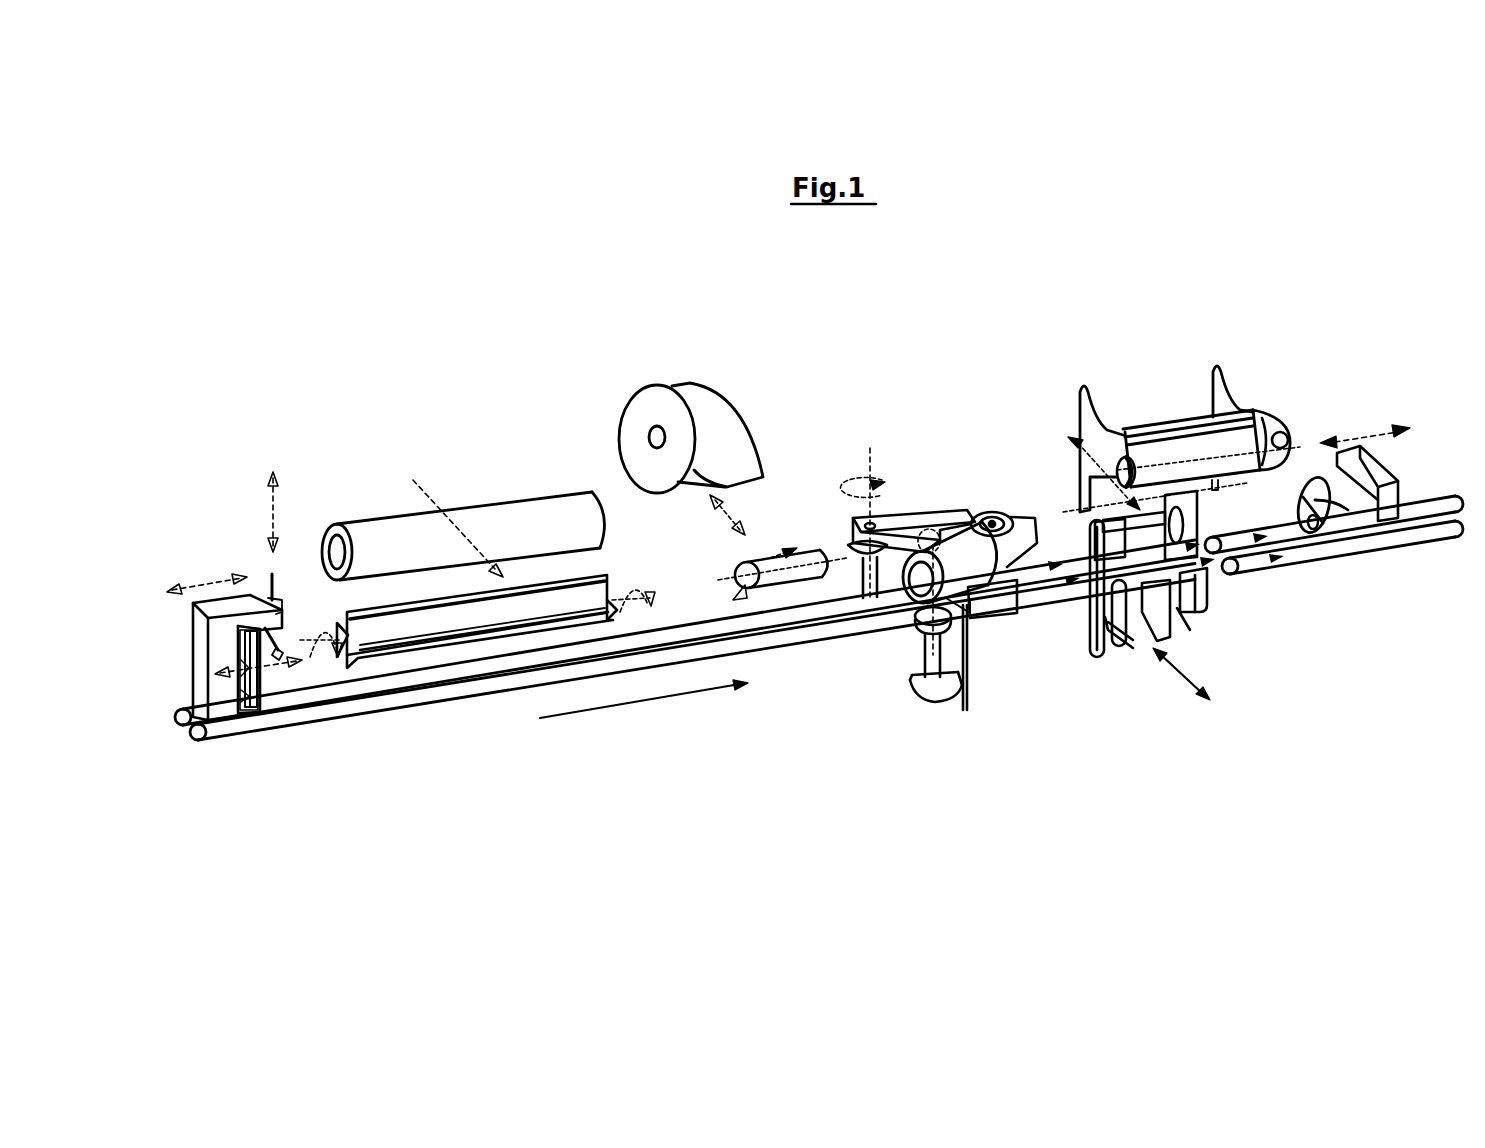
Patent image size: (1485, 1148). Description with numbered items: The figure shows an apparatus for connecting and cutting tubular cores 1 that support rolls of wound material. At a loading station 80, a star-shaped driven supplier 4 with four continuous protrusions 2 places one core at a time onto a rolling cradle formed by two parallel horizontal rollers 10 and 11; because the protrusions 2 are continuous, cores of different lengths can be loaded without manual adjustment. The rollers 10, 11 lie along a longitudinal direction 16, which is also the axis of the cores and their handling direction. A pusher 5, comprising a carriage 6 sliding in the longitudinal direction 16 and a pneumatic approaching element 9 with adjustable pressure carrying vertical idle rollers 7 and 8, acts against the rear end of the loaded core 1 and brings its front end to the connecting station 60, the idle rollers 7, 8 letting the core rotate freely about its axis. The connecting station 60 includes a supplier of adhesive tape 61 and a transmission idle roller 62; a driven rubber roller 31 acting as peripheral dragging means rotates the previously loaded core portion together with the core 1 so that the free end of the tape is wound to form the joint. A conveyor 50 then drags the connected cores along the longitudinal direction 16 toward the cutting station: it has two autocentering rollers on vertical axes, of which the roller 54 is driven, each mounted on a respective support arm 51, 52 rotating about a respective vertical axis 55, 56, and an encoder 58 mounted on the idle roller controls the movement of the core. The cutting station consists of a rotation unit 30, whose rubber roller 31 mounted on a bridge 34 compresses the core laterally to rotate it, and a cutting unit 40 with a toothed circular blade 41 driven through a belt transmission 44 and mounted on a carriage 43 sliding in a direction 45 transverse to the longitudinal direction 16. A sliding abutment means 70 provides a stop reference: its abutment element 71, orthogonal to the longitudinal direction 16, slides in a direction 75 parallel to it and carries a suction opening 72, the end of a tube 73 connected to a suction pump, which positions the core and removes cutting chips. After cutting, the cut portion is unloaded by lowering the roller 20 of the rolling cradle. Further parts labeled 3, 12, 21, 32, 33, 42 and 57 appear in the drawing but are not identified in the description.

The tubular core 1 is at (397, 537).
The continuous protrusion 2 is at (573, 590).
The pivot joint 3 is at (650, 597).
The star-shaped driven supplier 4 is at (522, 633).
The pusher 5 is at (213, 515).
The carriage 6 is at (193, 660).
The vertical idle roller 7 is at (262, 697).
The vertical idle roller 8 is at (263, 677).
The approaching element 9 is at (238, 714).
The roller 10 is at (383, 703).
The roller 11 is at (332, 693).
The pin 12 is at (320, 623).
The longitudinal direction 16 is at (640, 703).
The roller 20 is at (1428, 527).
The upper rail section 21 is at (1410, 510).
The rotation unit 30 is at (1147, 325).
The driven rubber roller 31 is at (1247, 468).
The hub 32 is at (1274, 430).
The flange 33 is at (1080, 508).
The bridge 34 is at (1235, 398).
The cutting unit 40 is at (1128, 745).
The toothed circular blade 41 is at (1197, 519).
The slide block 42 is at (1203, 590).
The carriage 43 is at (1124, 648).
The belt transmission 44 is at (1090, 630).
The transversal direction 45 is at (1187, 673).
The conveyor 50 is at (930, 375).
The support arm 51 is at (912, 522).
The support arm 52 is at (1013, 567).
The autocentering roller 54 is at (1000, 607).
The vertical axis 55 is at (872, 470).
The vertical axis 56 is at (930, 652).
The roller holder 57 is at (977, 573).
The encoder 58 is at (957, 523).
The connecting station 60 is at (767, 400).
The adhesive tape supplier 61 is at (637, 410).
The transmission idle roller 62 is at (818, 550).
The sliding abutment means 70 is at (1350, 372).
The abutment element 71 is at (1348, 512).
The suction opening 72 is at (1315, 520).
The tube 73 is at (1398, 480).
The sliding direction 75 is at (1383, 423).
The loading station 80 is at (493, 415).